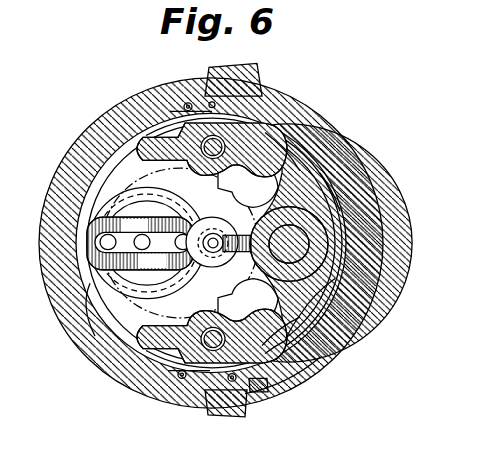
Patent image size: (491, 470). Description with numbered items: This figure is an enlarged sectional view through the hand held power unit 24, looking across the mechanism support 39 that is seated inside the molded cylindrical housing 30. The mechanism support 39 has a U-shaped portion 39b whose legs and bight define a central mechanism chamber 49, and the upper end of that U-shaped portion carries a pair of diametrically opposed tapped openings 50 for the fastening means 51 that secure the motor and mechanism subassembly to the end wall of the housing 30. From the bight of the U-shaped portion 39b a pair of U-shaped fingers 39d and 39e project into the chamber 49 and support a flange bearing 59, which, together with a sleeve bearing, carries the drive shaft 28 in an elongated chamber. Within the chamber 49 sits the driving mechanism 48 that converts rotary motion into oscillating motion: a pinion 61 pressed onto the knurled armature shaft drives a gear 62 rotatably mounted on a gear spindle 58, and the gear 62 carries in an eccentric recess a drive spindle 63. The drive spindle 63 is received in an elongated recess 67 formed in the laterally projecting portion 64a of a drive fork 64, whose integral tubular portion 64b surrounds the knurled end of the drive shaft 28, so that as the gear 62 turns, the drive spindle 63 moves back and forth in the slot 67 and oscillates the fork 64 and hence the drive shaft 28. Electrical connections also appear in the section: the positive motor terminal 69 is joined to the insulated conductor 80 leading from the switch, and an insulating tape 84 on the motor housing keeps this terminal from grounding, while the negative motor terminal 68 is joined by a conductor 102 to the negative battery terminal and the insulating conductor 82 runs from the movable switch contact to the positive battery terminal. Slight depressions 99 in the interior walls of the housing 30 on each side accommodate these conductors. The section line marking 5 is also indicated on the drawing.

The power unit 24 is at (378, 278).
The drive shaft 28 is at (320, 178).
The housing 30 is at (318, 373).
The mechanism support 39 is at (336, 304).
The U-shaped portion 39b is at (328, 327).
The U-shaped finger 39d is at (298, 148).
The U-shaped finger 39e is at (364, 355).
The driving mechanism 48 is at (224, 284).
The mechanism chamber 49 is at (296, 375).
The tapped opening 50 is at (262, 126).
The fastening means 51 is at (228, 148).
The gear spindle 58 is at (140, 243).
The flange bearing 59 is at (335, 200).
The pinion 61 is at (195, 186).
The gear 62 is at (147, 243).
The drive spindle 63 is at (100, 245).
The drive fork 64 is at (147, 242).
The laterally projecting portion 64a is at (90, 283).
The tubular portion 64b is at (406, 199).
The elongated recess 67 is at (142, 251).
The negative motor terminal 68 is at (258, 400).
The positive motor terminal 69 is at (176, 108).
The insulated conductor 80 is at (190, 100).
The insulating conductor 82 is at (178, 384).
The insulating tape 84 is at (158, 100).
The depressions 99 is at (215, 138).
The conductor 102 is at (236, 390).
The section line 5 is at (0, 263).